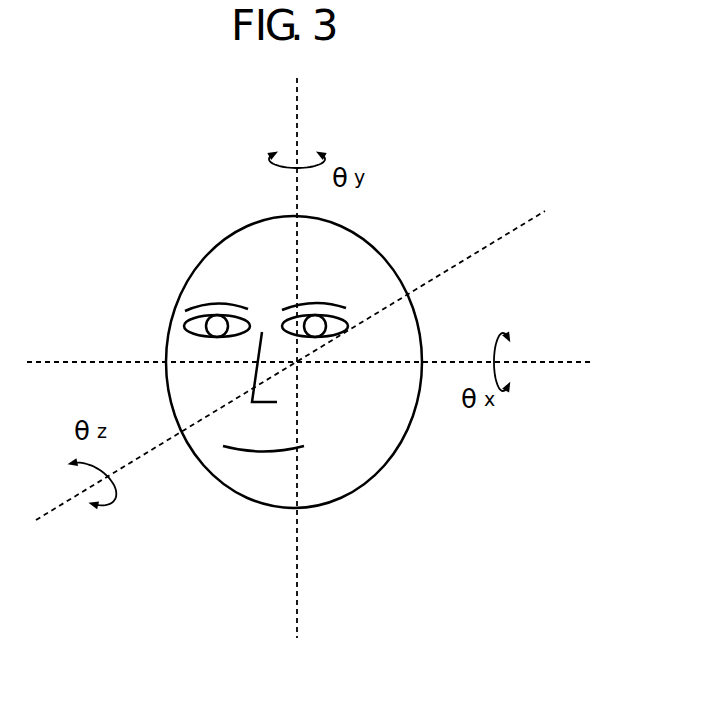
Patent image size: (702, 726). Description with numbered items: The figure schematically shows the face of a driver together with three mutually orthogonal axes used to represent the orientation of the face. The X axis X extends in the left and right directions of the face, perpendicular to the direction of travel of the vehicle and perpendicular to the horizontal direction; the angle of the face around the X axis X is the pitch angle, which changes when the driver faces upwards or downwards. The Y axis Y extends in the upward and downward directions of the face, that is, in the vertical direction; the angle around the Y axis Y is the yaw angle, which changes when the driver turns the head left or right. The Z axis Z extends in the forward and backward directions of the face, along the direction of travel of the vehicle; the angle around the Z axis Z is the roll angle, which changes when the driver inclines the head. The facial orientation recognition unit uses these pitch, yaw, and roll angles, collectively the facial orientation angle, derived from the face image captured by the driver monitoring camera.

The X axis X is at (308, 345).
The Y axis Y is at (284, 356).
The Z axis Z is at (290, 355).